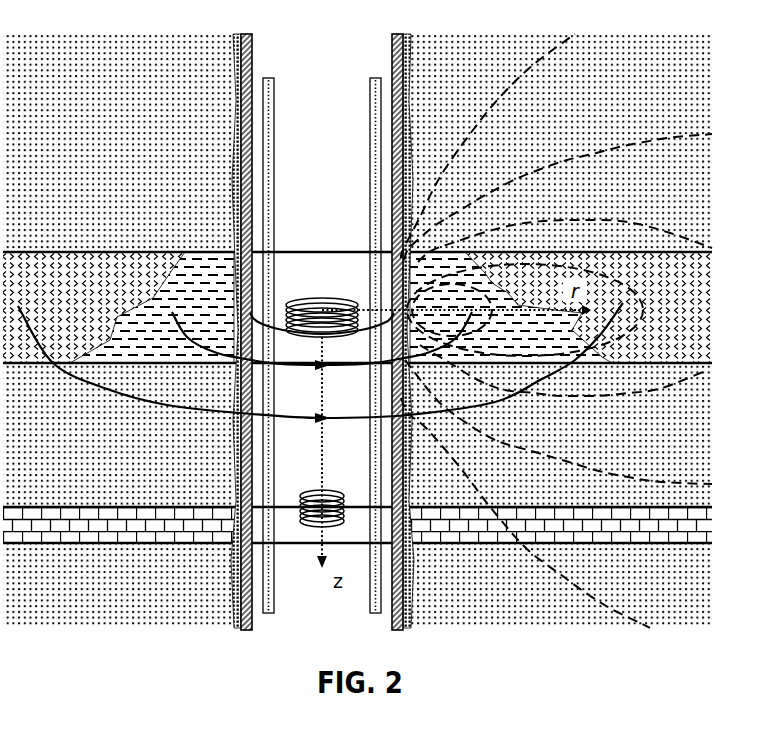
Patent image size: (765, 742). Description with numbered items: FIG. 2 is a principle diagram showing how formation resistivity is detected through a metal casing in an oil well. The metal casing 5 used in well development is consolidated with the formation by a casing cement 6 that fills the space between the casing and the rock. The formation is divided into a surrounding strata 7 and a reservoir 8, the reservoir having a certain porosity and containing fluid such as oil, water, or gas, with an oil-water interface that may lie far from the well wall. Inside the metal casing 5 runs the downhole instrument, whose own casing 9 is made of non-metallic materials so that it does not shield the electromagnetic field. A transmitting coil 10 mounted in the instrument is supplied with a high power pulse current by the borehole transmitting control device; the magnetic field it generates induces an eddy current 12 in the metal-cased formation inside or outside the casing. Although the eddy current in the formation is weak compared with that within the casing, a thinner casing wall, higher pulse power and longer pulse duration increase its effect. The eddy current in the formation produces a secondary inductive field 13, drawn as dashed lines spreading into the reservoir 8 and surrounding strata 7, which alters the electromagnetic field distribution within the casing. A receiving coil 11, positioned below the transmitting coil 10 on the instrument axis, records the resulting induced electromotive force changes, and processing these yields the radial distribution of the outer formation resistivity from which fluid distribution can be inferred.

The metal casing 5 is at (381, 57).
The casing cement 6 is at (416, 43).
The surrounding strata 7 is at (357, 331).
The reservoir 8 is at (357, 307).
The casing of the downhole instrument 9 is at (358, 123).
The transmitting coil 10 is at (313, 279).
The receiving coil 11 is at (332, 474).
The eddy current 12 is at (287, 429).
The secondary inductive field 13 is at (597, 253).